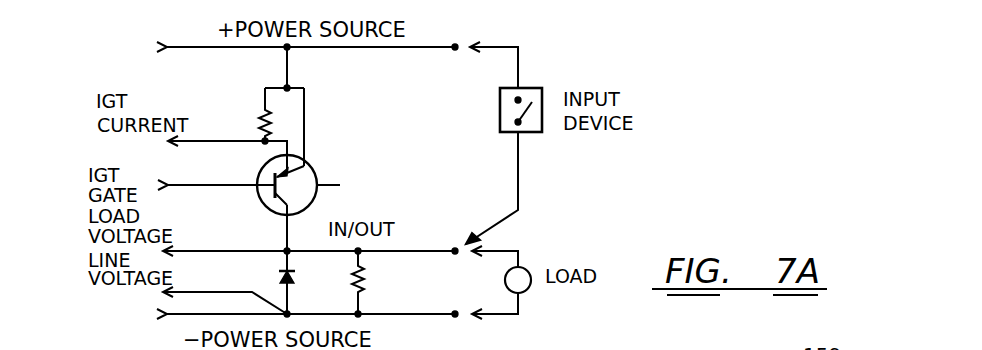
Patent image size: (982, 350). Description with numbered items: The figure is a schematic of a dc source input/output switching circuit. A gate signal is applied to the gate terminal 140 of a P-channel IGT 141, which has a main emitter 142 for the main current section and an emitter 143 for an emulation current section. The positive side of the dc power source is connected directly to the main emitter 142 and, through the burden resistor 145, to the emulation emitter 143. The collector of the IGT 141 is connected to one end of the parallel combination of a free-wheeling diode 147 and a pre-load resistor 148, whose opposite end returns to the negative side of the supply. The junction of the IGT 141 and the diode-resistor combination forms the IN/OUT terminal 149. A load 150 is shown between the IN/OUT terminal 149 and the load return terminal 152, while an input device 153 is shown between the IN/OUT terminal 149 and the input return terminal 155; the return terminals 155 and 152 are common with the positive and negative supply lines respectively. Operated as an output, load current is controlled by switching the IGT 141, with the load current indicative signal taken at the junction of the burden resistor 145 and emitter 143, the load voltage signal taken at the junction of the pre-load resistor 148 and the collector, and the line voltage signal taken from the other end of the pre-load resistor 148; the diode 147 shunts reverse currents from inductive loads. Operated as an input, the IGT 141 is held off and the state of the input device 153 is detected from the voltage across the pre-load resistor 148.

The gate terminal 140 is at (250, 188).
The P-channel IGT 141 is at (321, 185).
The main emitter 142 is at (305, 146).
The emulation section emitter 143 is at (287, 149).
The burden resistor 145 is at (262, 117).
The free-wheeling diode 147 is at (280, 274).
The pre-load resistor 148 is at (365, 277).
The IN/OUT terminal 149 is at (410, 230).
The load 150 is at (528, 289).
The load return terminal 152 is at (455, 316).
The input device 153 is at (500, 106).
The input return terminal 155 is at (455, 50).